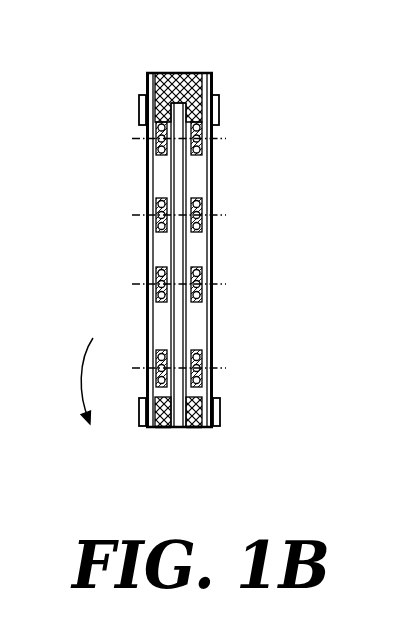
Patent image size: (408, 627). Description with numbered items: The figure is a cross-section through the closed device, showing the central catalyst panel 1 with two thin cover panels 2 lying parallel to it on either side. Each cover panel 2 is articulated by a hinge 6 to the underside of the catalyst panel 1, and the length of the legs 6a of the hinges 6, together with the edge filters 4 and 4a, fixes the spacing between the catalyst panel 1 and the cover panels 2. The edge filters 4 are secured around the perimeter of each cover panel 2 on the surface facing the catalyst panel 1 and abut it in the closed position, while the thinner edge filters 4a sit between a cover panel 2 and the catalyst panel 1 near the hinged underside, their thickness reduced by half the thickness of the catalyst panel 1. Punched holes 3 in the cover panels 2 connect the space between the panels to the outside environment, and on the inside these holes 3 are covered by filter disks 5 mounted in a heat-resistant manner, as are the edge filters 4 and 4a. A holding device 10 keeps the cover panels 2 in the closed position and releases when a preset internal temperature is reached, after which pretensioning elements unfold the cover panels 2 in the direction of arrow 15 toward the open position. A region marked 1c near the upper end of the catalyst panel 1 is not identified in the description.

The catalyst panel 1 is at (188, 176).
The shaft end portion 1c is at (215, 135).
The cover panel 2 is at (147, 318).
The punched holes 3 is at (215, 218).
The edge filter 4 is at (192, 72).
The edge filter 4a is at (195, 428).
The filter disk 5 is at (215, 387).
The hinge 6 is at (143, 428).
The leg 6a is at (160, 428).
The holding device 10 is at (140, 105).
The arrow 15 is at (82, 375).